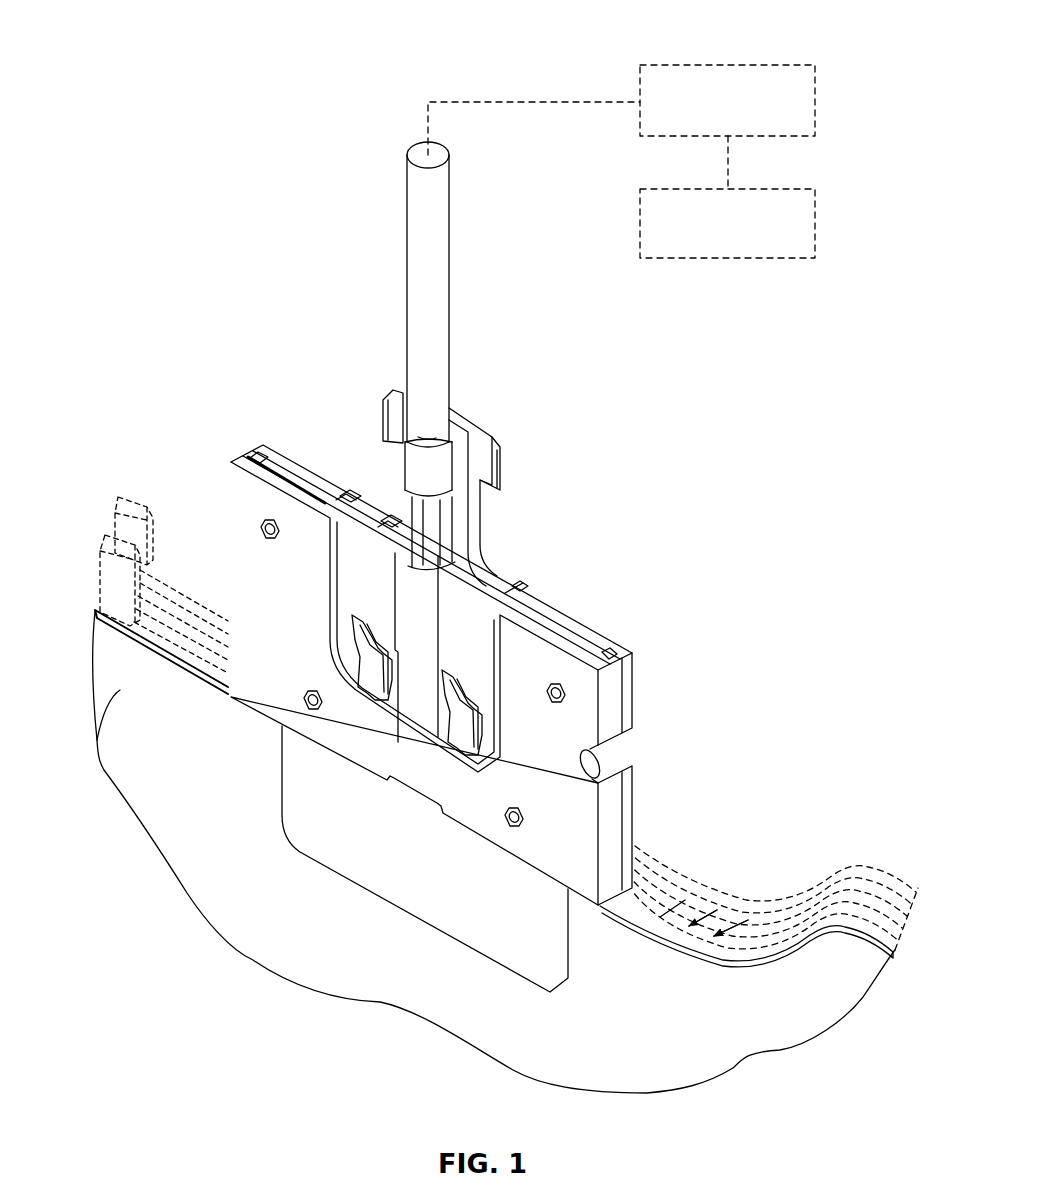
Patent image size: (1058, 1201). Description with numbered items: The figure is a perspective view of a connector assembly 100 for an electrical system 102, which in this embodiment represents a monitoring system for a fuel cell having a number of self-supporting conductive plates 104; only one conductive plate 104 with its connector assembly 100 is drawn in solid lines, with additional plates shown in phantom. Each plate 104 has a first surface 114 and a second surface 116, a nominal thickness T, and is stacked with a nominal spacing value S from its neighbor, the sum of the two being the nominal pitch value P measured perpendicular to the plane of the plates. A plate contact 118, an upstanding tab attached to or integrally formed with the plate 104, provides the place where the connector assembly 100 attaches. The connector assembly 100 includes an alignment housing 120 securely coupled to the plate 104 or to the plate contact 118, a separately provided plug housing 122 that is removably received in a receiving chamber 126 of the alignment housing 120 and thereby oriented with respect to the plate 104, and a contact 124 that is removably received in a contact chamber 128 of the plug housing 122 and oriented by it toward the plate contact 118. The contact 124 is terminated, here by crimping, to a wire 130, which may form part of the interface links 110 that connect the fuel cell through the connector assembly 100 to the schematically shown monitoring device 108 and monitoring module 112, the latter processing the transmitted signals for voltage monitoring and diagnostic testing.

The connector assembly 100 is at (160, 45).
The electrical system 102 is at (147, 448).
The conductive plate 104 is at (327, 972).
The monitoring device 108 is at (713, 65).
The interface link 110 is at (496, 100).
The monitoring module 112 is at (713, 189).
The first surface 114 is at (120, 690).
The second surface 116 is at (108, 612).
The plate contact 118 is at (347, 848).
The alignment housing 120 is at (598, 645).
The plug housing 122 is at (515, 588).
The contact 124 is at (482, 580).
The receiving chamber 126 is at (342, 497).
The contact chamber 128 is at (385, 526).
The wire 130 is at (416, 332).
The nominal thickness T is at (641, 926).
The nominal spacing value S is at (671, 931).
The nominal pitch value P is at (685, 948).